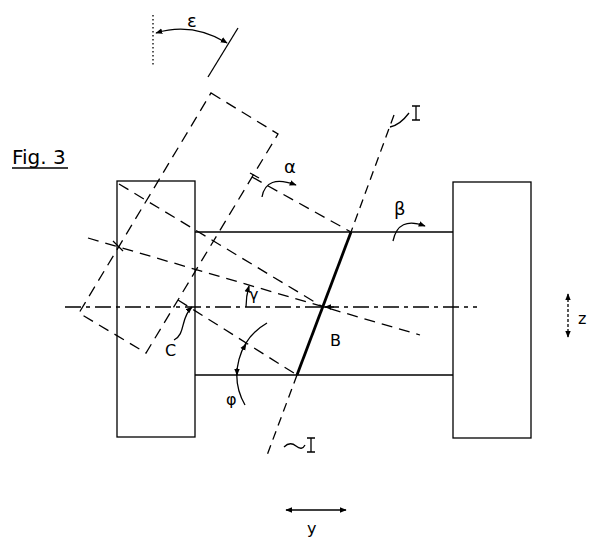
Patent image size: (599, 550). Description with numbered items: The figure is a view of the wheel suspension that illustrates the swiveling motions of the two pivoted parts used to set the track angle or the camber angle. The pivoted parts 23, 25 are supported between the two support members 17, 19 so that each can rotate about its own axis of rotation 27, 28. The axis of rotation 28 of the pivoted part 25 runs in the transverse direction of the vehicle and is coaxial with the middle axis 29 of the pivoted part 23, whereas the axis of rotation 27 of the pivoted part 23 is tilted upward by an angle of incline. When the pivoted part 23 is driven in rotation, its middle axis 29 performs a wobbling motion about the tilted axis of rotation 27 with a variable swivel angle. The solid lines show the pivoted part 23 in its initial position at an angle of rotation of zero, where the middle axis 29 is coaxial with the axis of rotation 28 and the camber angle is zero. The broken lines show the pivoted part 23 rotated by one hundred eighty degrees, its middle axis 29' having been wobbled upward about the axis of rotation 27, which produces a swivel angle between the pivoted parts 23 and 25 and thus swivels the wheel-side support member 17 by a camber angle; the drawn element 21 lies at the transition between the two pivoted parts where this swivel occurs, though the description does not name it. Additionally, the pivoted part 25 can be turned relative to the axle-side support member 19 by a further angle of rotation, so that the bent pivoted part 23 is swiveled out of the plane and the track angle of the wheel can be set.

The wheel-side support member 17 is at (170, 423).
The axle-side support member 19 is at (502, 423).
The mirror / reflecting element 21 is at (376, 90).
The pivoted part 23 is at (306, 207).
The pivoted part 25 is at (418, 378).
The axis of rotation 27 is at (106, 247).
The axis of rotation 28 is at (379, 307).
The middle axis 29 is at (185, 284).
The middle axis in rotated position 29' is at (201, 223).